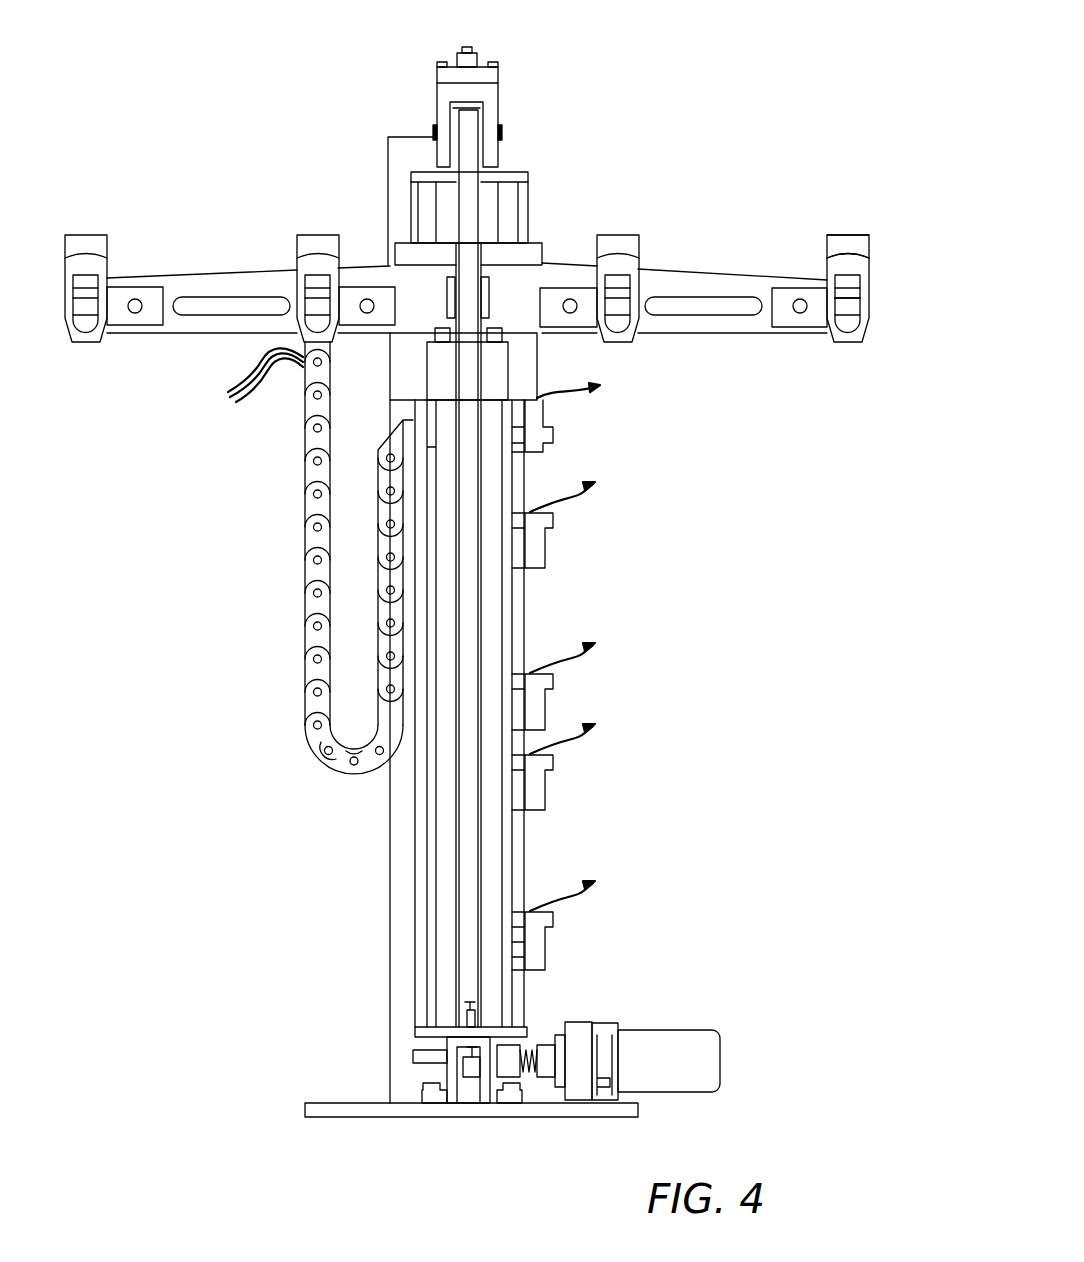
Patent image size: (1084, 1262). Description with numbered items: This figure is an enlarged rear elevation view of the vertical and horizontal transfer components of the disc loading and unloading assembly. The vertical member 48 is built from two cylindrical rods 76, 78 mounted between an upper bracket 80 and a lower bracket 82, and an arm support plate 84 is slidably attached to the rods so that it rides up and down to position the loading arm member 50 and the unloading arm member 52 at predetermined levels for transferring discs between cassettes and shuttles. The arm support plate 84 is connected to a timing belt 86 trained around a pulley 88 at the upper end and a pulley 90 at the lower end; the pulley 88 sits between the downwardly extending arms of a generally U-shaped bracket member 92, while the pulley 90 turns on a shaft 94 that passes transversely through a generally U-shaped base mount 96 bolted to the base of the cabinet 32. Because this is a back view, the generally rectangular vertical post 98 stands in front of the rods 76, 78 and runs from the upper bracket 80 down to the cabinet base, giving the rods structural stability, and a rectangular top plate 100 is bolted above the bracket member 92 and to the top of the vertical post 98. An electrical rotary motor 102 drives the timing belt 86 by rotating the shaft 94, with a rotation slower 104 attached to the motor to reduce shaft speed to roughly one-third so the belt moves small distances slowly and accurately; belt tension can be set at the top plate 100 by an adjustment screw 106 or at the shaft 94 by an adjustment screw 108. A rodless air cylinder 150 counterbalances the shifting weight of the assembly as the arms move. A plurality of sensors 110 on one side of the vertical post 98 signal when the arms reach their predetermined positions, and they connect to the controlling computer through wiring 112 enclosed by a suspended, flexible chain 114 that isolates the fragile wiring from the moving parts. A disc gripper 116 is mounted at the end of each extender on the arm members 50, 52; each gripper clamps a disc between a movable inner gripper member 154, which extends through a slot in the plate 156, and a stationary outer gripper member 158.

The cabinet 32 is at (355, 1112).
The vertical member 48 is at (508, 186).
The loading arm member 50 is at (722, 282).
The unloading arm member 52 is at (222, 282).
The cylindrical rod 76 is at (413, 212).
The cylindrical rod 78 is at (520, 220).
The upper bracket 80 is at (535, 195).
The lower bracket 82 is at (517, 1030).
The arm support plate 84 is at (532, 255).
The timing belt 86 is at (472, 897).
The pulley 88 is at (478, 120).
The pulley 90 is at (470, 1077).
The bracket member 92 is at (445, 102).
The shaft 94 is at (422, 1060).
The base mount 96 is at (437, 1095).
The vertical post 98 is at (435, 157).
The top plate 100 is at (442, 72).
The rotary motor 102 is at (673, 1052).
The rotation slower 104 is at (577, 1040).
The adjustment screw 106 is at (482, 80).
The adjustment screw 108 is at (463, 1077).
The sensors 110 is at (528, 412).
The wiring 112 is at (233, 400).
The flexible chain 114 is at (313, 702).
The disc gripper 116 is at (93, 351).
The rodless air cylinder 150 is at (398, 172).
The inner gripper member 154 is at (850, 312).
The plate 156 is at (863, 273).
The outer gripper member 158 is at (858, 245).